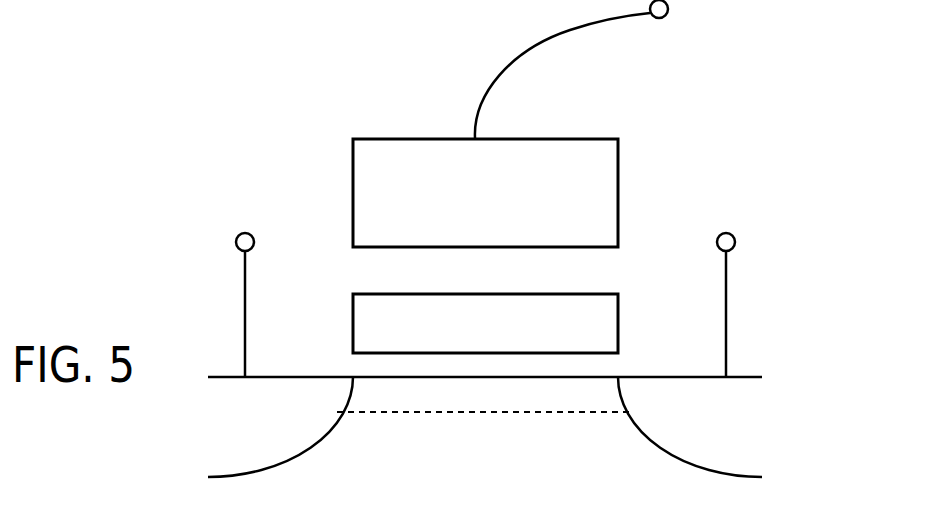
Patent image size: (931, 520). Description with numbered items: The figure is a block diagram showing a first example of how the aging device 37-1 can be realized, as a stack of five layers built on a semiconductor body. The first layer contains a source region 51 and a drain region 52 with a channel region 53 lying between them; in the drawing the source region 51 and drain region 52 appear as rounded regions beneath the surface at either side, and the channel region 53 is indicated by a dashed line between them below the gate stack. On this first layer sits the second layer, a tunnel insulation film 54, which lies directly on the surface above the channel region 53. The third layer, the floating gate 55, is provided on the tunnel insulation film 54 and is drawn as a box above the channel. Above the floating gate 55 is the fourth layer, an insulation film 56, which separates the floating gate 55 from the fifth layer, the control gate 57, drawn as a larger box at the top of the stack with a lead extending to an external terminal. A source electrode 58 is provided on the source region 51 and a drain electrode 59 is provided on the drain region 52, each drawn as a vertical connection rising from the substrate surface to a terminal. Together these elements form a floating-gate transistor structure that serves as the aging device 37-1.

The aging device 37-1 is at (345, 92).
The source region 51 is at (308, 442).
The drain region 52 is at (660, 443).
The channel region 53 is at (552, 413).
The tunnel insulation film 54 is at (603, 363).
The floating gate 55 is at (618, 325).
The insulation film 56 is at (603, 273).
The control gate 57 is at (570, 138).
The source electrode 58 is at (235, 242).
The drain electrode 59 is at (737, 242).